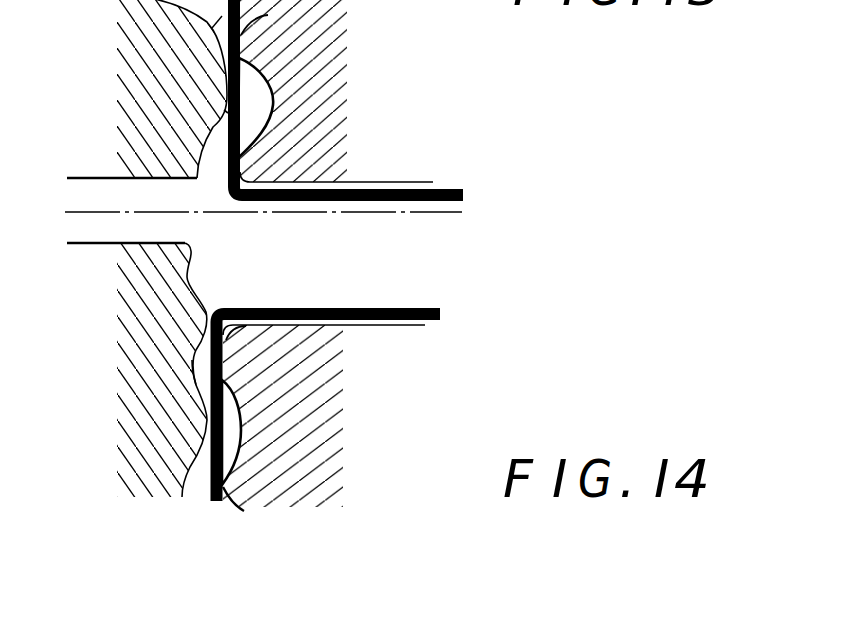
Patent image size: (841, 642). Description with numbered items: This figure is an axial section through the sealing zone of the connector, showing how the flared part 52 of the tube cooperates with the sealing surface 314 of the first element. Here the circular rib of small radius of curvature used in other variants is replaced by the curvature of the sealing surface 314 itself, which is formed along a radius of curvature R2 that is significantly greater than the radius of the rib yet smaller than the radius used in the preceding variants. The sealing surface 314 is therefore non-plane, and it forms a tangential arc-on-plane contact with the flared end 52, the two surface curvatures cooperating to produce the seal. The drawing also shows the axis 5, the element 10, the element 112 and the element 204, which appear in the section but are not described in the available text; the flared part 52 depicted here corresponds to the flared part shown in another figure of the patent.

The longitudinal axis 5 is at (402, 204).
The tubular member 10 is at (89, 212).
The flared part 52 is at (242, 7).
The sealing surface 112 is at (207, 455).
The bead 204 is at (240, 402).
The sealing surface 314 is at (125, 0).
The radius of curvature R2 is at (226, 113).